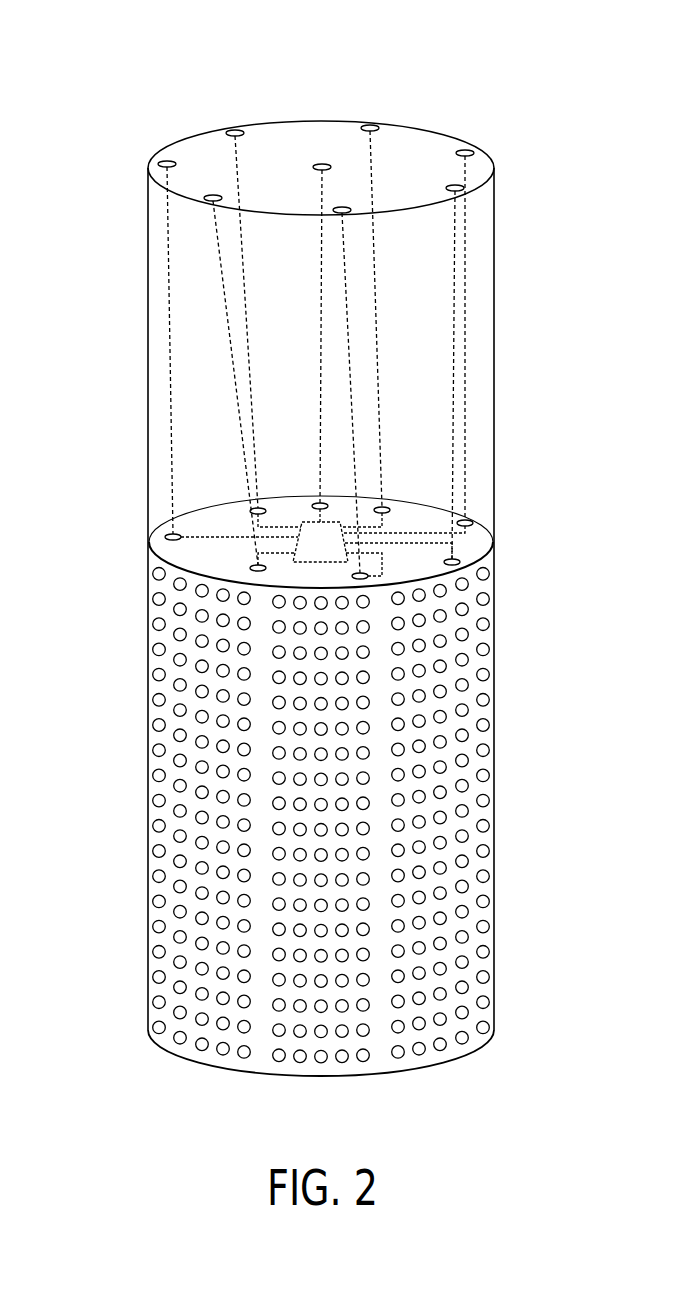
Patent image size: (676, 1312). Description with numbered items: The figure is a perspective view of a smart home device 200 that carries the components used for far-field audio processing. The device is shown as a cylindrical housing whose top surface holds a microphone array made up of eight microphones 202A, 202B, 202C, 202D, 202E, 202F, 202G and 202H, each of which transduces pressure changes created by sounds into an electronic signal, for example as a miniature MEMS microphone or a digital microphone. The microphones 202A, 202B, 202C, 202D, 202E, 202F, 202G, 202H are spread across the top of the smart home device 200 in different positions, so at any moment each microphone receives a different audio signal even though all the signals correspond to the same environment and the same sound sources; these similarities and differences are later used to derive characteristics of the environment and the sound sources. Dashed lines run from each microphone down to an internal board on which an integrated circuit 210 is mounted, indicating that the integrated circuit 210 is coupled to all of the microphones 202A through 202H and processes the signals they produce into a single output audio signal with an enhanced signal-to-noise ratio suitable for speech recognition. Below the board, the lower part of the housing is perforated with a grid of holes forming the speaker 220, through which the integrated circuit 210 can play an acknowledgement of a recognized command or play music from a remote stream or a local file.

The smart home device 200 is at (98, 82).
The microphone 202A is at (372, 130).
The microphone 202B is at (468, 153).
The microphone 202C is at (458, 190).
The microphone 202D is at (340, 212).
The microphone 202E is at (210, 199).
The microphone 202F is at (165, 163).
The microphone 202G is at (232, 132).
The microphone 202H is at (320, 165).
The integrated circuit 210 is at (308, 522).
The speaker 220 is at (495, 688).